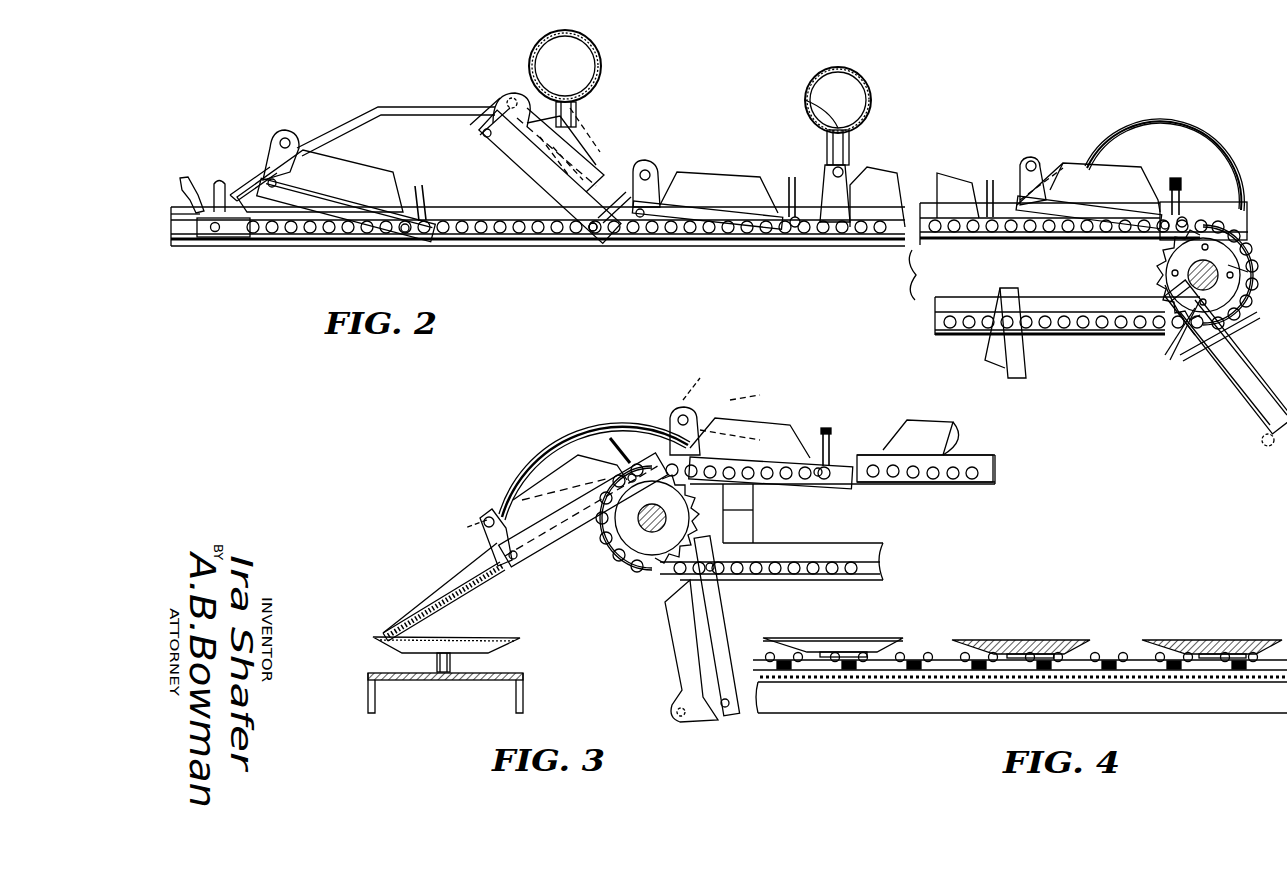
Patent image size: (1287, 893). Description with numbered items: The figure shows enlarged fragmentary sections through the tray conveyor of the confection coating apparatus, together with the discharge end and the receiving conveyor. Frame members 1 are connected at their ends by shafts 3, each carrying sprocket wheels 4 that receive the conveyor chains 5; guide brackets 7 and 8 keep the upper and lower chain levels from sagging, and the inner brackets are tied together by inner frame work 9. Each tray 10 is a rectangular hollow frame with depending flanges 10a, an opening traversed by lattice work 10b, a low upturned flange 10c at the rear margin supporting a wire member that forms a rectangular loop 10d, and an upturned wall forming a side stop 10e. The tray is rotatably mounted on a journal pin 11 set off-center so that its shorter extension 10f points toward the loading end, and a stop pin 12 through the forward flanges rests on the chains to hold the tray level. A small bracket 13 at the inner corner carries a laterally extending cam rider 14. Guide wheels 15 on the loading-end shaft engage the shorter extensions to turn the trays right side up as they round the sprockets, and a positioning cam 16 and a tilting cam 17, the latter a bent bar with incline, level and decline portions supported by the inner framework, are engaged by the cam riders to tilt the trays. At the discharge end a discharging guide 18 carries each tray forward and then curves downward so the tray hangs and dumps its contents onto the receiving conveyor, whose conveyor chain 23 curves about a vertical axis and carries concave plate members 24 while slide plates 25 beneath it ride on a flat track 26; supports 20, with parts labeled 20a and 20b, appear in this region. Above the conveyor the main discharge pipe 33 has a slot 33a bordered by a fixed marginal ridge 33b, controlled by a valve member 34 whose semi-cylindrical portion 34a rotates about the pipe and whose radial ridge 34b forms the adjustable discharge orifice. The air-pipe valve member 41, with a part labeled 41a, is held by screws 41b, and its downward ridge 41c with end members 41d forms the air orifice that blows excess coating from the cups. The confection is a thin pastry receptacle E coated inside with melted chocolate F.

In FIG. 2, the frame members 1 is at (1250, 365).
In FIG. 2, the shafts 3 is at (1248, 298).
In FIG. 2, the sprocket wheels 4 is at (1180, 270).
In FIG. 3, the sprocket wheels 4 is at (455, 568).
In FIG. 2, the conveyor chains 5 is at (262, 238).
In FIG. 3, the conveyor chains 5 is at (785, 565).
In FIG. 2, the conveyor guide brackets 7 is at (925, 275).
In FIG. 2, the conveyor guide brackets 8 is at (475, 232).
In FIG. 3, the conveyor guide brackets 8 is at (845, 548).
In FIG. 2, the inner frame work 9 is at (1150, 272).
In FIG. 3, the inner frame work 9 is at (745, 522).
In FIG. 2, the trays 10 is at (232, 238).
In FIG. 3, the trays 10 is at (735, 430).
In FIG. 2, the depending flanges 10a is at (668, 235).
In FIG. 3, the depending flanges 10a is at (841, 472).
In FIG. 2, the lattice work 10b is at (1060, 200).
In FIG. 2, the upturned flange 10c is at (796, 230).
In FIG. 2, the rectangular loop 10d is at (795, 210).
In FIG. 3, the rectangular loop 10d is at (828, 435).
In FIG. 2, the side stop 10e is at (575, 152).
In FIG. 3, the side stop 10e is at (672, 650).
In FIG. 2, the shorter extension 10f is at (612, 250).
In FIG. 2, the journal pins 11 is at (403, 233).
In FIG. 3, the journal pins 11 is at (815, 480).
In FIG. 2, the stop pins 12 is at (262, 175).
In FIG. 3, the stop pins 12 is at (715, 440).
In FIG. 2, the brackets 13 is at (292, 135).
In FIG. 3, the brackets 13 is at (489, 515).
In FIG. 2, the cam riders 14 is at (283, 138).
In FIG. 3, the cam riders 14 is at (578, 446).
In FIG. 2, the guide wheels 15 is at (1245, 235).
In FIG. 2, the positioning cam 16 is at (1165, 122).
In FIG. 2, the tilting cam 17 is at (418, 100).
In FIG. 3, the discharging guide 18 is at (563, 442).
In FIG. 2, the supports 20 is at (588, 45).
In FIG. 2, the ring holder outer part 20a is at (600, 55).
In FIG. 2, the ring holder inner part 20b is at (597, 76).
In FIG. 3, the conveyor chain 23 is at (440, 672).
In FIG. 4, the conveyor chain 23 is at (1108, 656).
In FIG. 3, the plate members 24 is at (465, 638).
In FIG. 4, the plate members 24 is at (832, 638).
In FIG. 3, the slide plates 25 is at (490, 675).
In FIG. 4, the slide plates 25 is at (1215, 682).
In FIG. 3, the track 26 is at (525, 702).
In FIG. 2, the main discharge pipe 33 is at (872, 95).
In FIG. 2, the slot 33a is at (806, 100).
In FIG. 2, the marginal ridge 33b is at (826, 145).
In FIG. 2, the valve member 34 is at (832, 68).
In FIG. 2, the semi-cylindrical portion 34a is at (858, 78).
In FIG. 2, the radially extending ridge 34b is at (870, 115).
In FIG. 2, the valve member 41 is at (505, 92).
In FIG. 2, the cylinder part 41a is at (580, 110).
In FIG. 2, the screws 41b is at (565, 62).
In FIG. 2, the downwardly extending ridge 41c is at (505, 168).
In FIG. 2, the end members 41d is at (516, 180).
In FIG. 3, the receptacle E is at (412, 615).
In FIG. 3, the moisture proof coating F is at (380, 626).